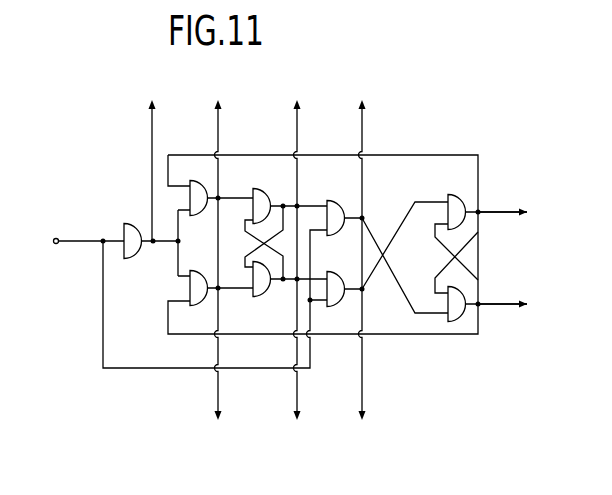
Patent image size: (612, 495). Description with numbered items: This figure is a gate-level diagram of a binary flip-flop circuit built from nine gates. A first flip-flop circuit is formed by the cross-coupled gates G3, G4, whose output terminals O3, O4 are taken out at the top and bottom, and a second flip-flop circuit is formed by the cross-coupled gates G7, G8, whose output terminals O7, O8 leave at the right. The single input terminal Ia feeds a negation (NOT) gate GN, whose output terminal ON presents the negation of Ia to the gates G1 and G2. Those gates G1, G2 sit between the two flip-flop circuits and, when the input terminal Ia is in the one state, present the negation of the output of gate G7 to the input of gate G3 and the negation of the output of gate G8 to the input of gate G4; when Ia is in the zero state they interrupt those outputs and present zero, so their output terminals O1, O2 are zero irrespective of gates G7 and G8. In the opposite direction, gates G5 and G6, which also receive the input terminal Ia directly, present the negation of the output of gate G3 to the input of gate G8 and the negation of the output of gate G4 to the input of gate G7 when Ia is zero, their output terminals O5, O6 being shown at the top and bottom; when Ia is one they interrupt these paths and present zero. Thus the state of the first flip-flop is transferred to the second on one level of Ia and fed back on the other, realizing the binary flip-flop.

The input terminal Ia is at (75, 242).
The negation gate GN is at (124, 230).
The gate G1 is at (193, 181).
The gate G2 is at (189, 287).
The gate G3 is at (260, 189).
The gate G4 is at (260, 297).
The gate G5 is at (331, 201).
The gate G6 is at (333, 307).
The gate G7 is at (466, 203).
The gate G8 is at (462, 313).
The output terminal ON is at (154, 154).
The output terminal O1 is at (222, 133).
The output terminal O2 is at (220, 326).
The output terminal O3 is at (300, 137).
The output terminal O4 is at (298, 330).
The output terminal O5 is at (366, 143).
The output terminal O6 is at (365, 336).
The output terminal O7 is at (521, 214).
The output terminal O8 is at (521, 307).